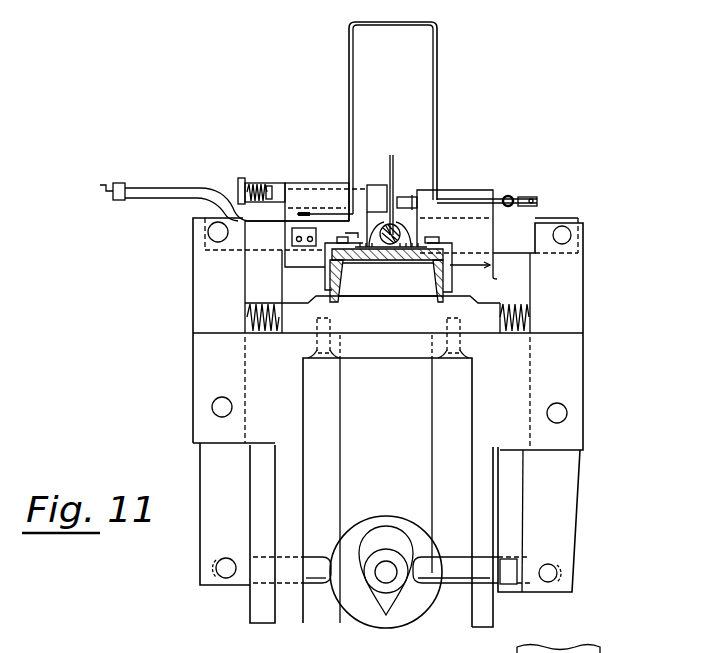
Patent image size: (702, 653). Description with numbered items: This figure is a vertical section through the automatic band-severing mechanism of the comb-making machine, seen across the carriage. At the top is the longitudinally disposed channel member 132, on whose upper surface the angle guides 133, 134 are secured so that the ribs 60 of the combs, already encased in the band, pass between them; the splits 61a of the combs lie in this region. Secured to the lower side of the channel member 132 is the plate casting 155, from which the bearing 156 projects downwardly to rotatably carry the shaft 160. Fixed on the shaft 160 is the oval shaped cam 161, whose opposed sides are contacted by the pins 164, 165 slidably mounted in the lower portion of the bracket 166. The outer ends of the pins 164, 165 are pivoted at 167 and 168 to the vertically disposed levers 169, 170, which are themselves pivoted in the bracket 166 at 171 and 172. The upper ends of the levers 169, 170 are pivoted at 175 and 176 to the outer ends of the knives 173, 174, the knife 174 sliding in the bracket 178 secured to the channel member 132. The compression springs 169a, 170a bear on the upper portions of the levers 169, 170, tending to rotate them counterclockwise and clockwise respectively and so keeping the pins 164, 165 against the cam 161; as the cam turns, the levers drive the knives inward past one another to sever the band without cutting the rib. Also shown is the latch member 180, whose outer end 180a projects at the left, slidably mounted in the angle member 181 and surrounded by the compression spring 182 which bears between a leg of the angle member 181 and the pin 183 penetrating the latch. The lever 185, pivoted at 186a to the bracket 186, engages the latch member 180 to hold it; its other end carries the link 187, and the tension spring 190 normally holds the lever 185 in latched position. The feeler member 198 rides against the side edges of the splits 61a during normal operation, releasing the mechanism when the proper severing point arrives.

The rib 60 is at (413, 228).
The split 61a is at (392, 156).
The channel member 132 is at (453, 284).
The angle guide 133 is at (325, 235).
The angle guide 134 is at (423, 246).
The plate casting 155 is at (388, 327).
The bearing 156 is at (412, 455).
The shaft 160 is at (387, 572).
The oval shaped cam 161 is at (386, 522).
The pin 164 is at (318, 565).
The pin 165 is at (450, 566).
The bracket 166 is at (301, 403).
The pivot 167 is at (215, 568).
The pivot 168 is at (558, 573).
The lever 169 is at (206, 530).
The compression spring 169a is at (258, 304).
The lever 170 is at (572, 514).
The compression spring 170a is at (523, 306).
The pivot 171 is at (227, 391).
The pivot 172 is at (570, 392).
The knife 173 is at (265, 235).
The knife 174 is at (457, 234).
The pivot 175 is at (207, 232).
The pivot 176 is at (572, 235).
The bracket 178 is at (485, 269).
The latch member 180 is at (165, 193).
The lever arm end 180a is at (87, 182).
The angle member 181 is at (242, 182).
The compression spring 182 is at (256, 181).
The pin 183 is at (268, 183).
The lever 185 is at (209, 190).
The bracket 186 is at (290, 252).
The pivot 186a is at (303, 217).
The link 187 is at (533, 197).
The tension spring 190 is at (511, 190).
The feeler member 198 is at (401, 192).